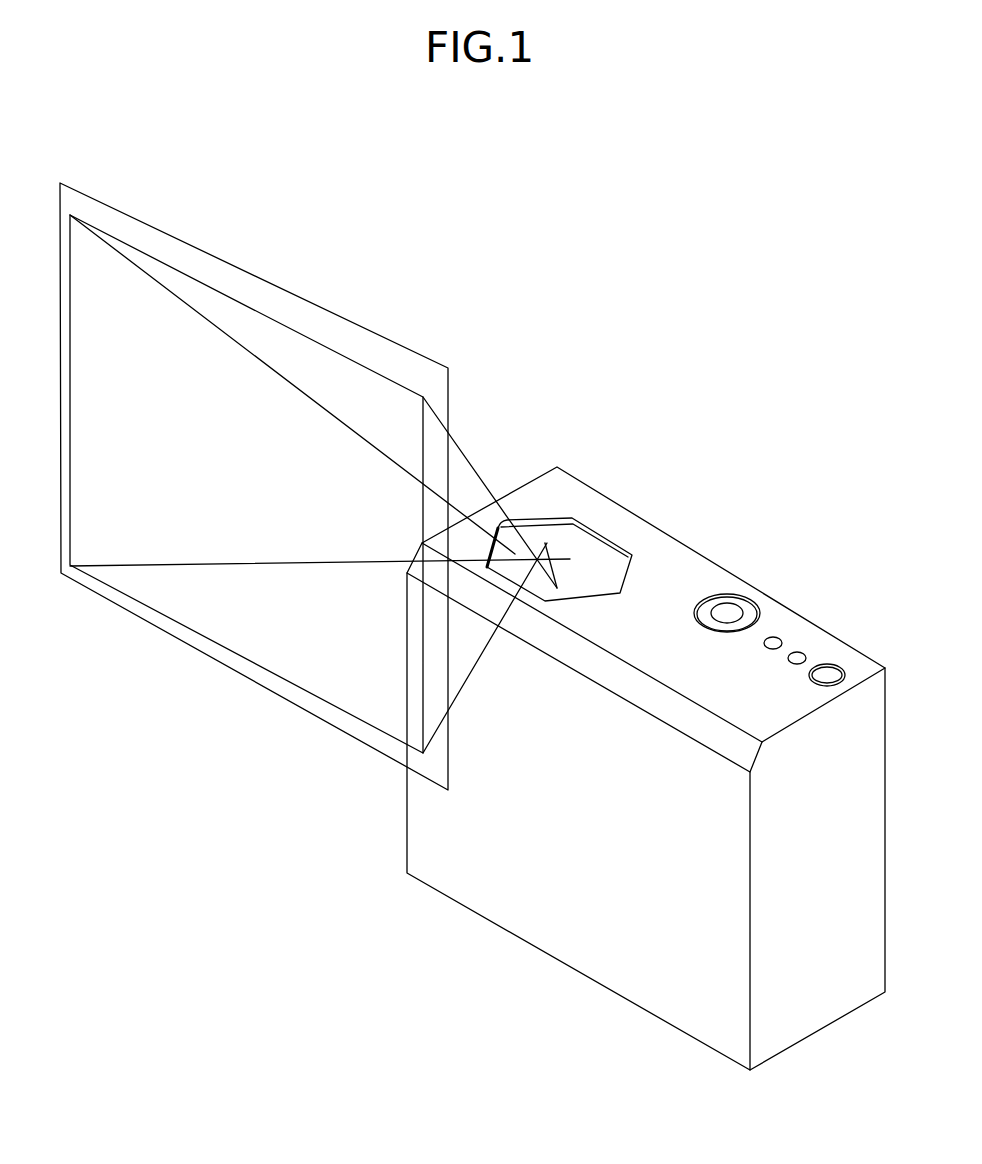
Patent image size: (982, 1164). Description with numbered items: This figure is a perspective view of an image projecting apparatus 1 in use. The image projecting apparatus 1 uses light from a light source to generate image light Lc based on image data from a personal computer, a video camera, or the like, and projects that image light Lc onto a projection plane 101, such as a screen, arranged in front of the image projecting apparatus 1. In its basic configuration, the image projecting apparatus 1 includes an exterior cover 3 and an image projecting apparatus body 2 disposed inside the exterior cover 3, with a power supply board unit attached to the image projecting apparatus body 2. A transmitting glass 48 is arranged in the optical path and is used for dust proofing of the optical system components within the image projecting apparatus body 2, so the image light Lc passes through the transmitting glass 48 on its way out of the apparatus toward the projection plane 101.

The image projecting apparatus 1 is at (752, 505).
The image projecting apparatus body 2 is at (604, 548).
The exterior cover 3 is at (667, 580).
The transmitting glass 48 is at (537, 535).
The projection plane 101 is at (338, 310).
The image light Lc is at (477, 469).